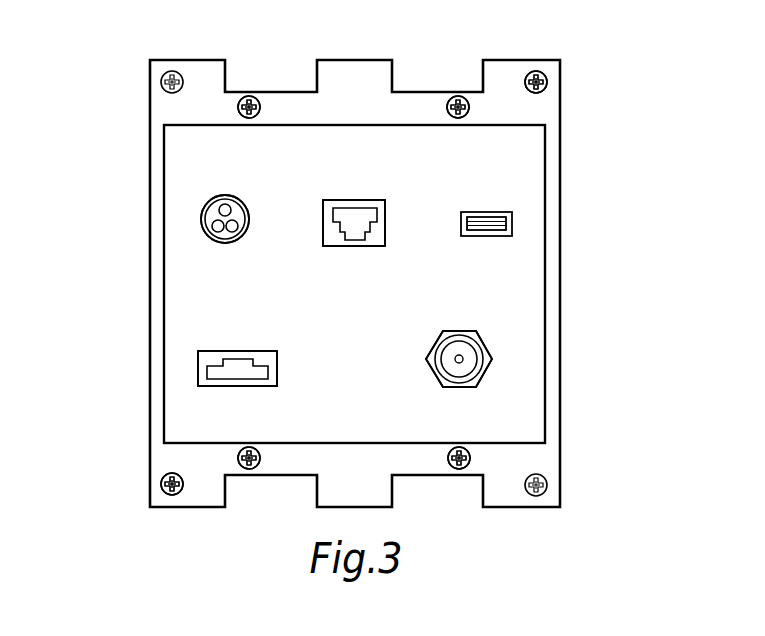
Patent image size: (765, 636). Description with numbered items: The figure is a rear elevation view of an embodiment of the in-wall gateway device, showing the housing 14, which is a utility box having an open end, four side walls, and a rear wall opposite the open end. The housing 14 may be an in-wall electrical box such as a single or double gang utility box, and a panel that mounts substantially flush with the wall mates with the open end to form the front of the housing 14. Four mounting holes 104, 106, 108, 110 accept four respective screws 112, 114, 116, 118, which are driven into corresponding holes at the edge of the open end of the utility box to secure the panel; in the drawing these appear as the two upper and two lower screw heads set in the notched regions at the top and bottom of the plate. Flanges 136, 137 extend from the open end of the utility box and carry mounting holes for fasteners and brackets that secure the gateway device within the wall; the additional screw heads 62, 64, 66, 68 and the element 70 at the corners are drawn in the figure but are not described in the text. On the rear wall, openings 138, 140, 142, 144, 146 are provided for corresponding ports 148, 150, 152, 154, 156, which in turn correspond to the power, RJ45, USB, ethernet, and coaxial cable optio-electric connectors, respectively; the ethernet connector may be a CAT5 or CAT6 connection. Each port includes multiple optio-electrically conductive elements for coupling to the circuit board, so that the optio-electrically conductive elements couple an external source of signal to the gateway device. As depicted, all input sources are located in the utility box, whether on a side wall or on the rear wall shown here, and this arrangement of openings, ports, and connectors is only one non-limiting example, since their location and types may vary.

The housing 14 is at (571, 166).
The screw 62 is at (538, 71).
The screw 64 is at (180, 72).
The screw 66 is at (178, 495).
The screw 68 is at (531, 496).
The screw hole 70 is at (531, 71).
The mounting hole 104 is at (251, 96).
The mounting hole 106 is at (252, 469).
The mounting hole 108 is at (456, 469).
The mounting hole 110 is at (456, 96).
The screw 112 is at (247, 96).
The screw 114 is at (247, 469).
The screw 116 is at (461, 469).
The screw 118 is at (460, 96).
The flange 136 is at (297, 105).
The flange 137 is at (157, 500).
The opening 138 is at (202, 222).
The opening 140 is at (385, 211).
The opening 142 is at (488, 212).
The opening 144 is at (247, 351).
The opening 146 is at (489, 350).
The port 148 is at (210, 202).
The port 150 is at (323, 226).
The port 152 is at (486, 228).
The port 154 is at (198, 368).
The port 156 is at (437, 375).